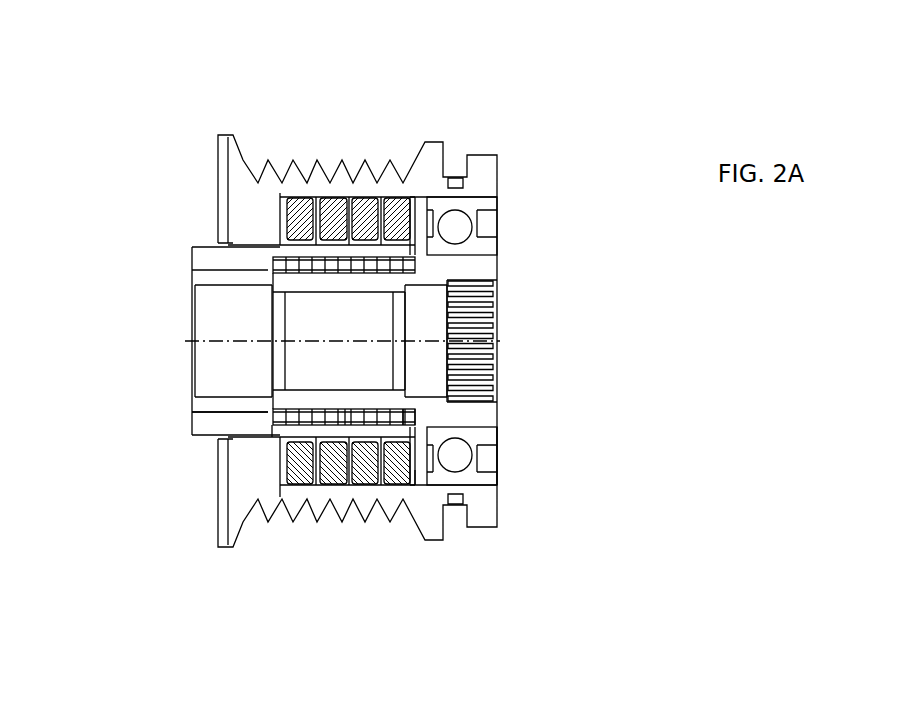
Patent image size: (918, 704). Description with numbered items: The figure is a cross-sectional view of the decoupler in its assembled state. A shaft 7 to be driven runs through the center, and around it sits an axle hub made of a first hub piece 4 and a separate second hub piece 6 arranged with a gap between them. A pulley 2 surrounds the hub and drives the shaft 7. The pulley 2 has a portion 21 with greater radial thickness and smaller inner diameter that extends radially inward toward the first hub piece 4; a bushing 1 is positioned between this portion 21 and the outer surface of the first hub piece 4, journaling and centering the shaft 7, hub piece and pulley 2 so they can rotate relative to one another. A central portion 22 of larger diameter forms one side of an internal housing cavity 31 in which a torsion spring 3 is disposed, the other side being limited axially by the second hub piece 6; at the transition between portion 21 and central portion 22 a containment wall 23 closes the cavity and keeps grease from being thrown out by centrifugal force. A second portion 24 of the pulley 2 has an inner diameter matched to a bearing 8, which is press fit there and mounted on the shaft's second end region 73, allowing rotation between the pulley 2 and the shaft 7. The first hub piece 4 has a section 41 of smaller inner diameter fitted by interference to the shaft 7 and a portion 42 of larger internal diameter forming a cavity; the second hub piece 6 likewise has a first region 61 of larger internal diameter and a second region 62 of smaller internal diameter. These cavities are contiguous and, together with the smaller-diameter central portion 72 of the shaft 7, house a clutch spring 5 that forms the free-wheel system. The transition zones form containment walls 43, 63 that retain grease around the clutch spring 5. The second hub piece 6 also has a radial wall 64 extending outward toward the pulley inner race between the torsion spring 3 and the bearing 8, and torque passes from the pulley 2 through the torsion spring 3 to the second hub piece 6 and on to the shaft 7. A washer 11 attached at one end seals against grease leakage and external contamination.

The bushing 1 is at (221, 231).
The pulley 2 is at (325, 145).
The portion with greater radial thickness 21 is at (232, 192).
The central portion 22 is at (347, 190).
The containment wall 23 is at (287, 185).
The second portion 24 is at (449, 168).
The torsion spring 3 is at (369, 195).
The first hub piece 4 is at (190, 261).
The section with smaller inner diameter 41 is at (202, 427).
The portion with larger internal diameter 42 is at (278, 432).
The containment wall 43 is at (268, 415).
The clutch spring 5 is at (284, 267).
The second hub piece 6 is at (406, 470).
The first region of larger internal diameter 61 is at (353, 430).
The second region of smaller internal diameter 62 is at (420, 433).
The containment wall 63 is at (408, 413).
The radial wall 64 is at (418, 480).
The shaft 7 is at (503, 271).
The central portion 72 is at (322, 398).
The second end region 73 is at (423, 418).
The bearing 8 is at (477, 206).
The washer 11 is at (510, 465).
The housing cavity 31 is at (305, 487).